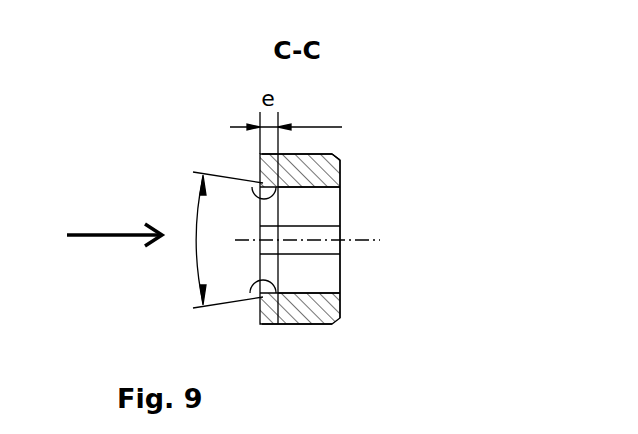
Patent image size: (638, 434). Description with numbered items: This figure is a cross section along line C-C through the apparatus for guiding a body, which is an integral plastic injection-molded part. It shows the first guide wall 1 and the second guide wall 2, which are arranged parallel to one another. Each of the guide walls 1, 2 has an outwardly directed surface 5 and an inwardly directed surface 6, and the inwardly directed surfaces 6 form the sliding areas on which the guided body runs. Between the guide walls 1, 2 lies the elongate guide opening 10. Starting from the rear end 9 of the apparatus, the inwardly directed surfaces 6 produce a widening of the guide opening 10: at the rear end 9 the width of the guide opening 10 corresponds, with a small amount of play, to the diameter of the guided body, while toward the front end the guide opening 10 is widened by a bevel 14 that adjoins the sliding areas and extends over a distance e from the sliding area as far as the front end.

The first guide wall 1 is at (336, 156).
The second guide wall 2 is at (310, 311).
The outwardly directed surface 5 is at (308, 154).
The inwardly directed surface 6 is at (330, 187).
The rear end 9 is at (340, 173).
The guide opening 10 is at (322, 243).
The bevel 14 is at (253, 196).